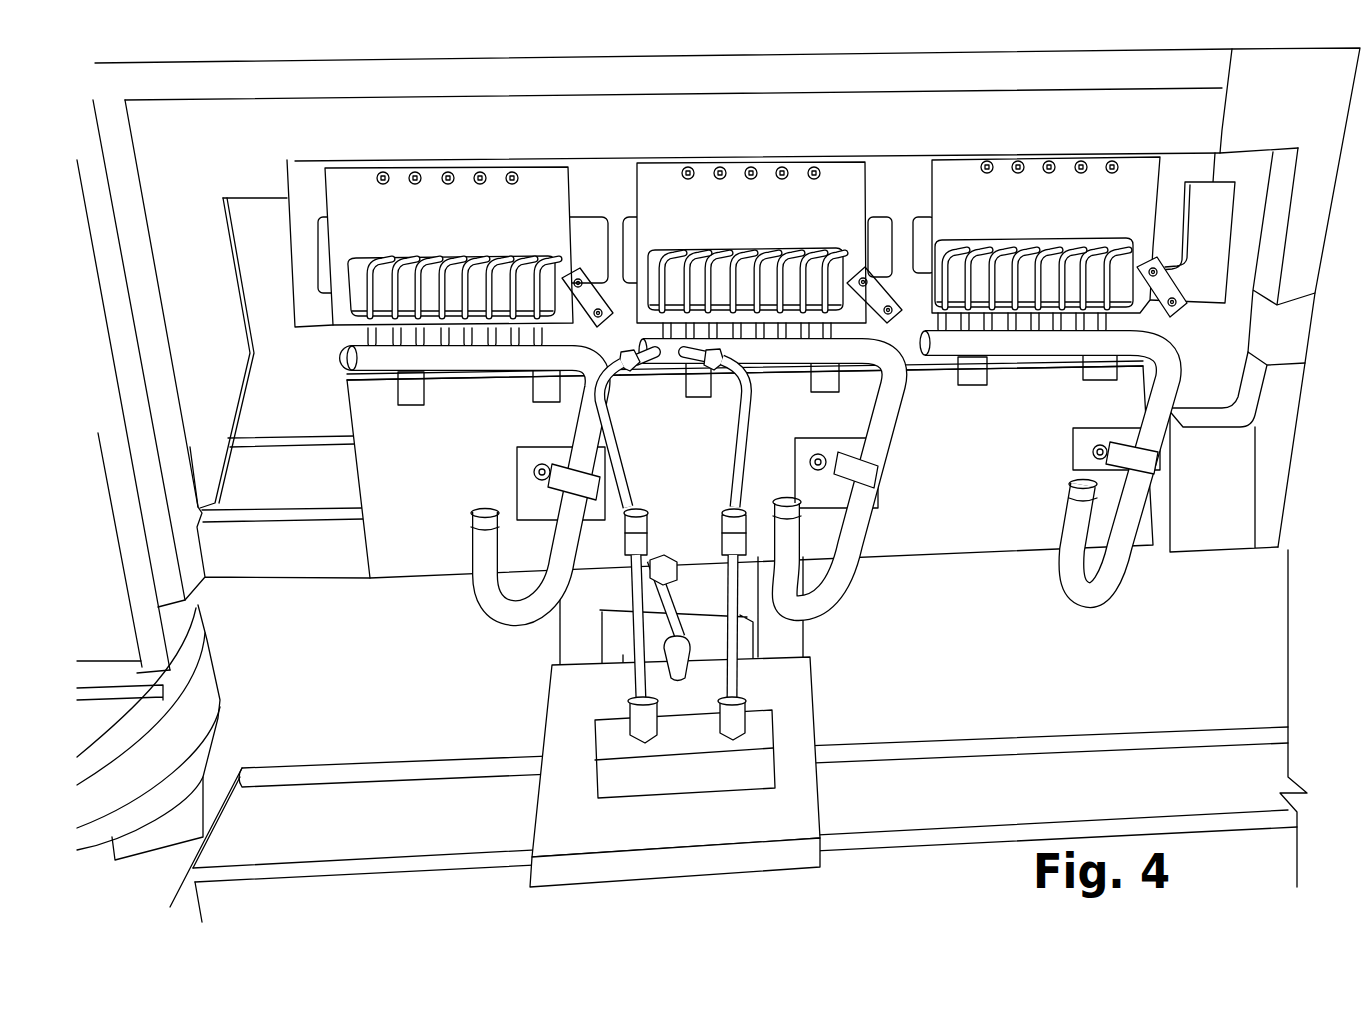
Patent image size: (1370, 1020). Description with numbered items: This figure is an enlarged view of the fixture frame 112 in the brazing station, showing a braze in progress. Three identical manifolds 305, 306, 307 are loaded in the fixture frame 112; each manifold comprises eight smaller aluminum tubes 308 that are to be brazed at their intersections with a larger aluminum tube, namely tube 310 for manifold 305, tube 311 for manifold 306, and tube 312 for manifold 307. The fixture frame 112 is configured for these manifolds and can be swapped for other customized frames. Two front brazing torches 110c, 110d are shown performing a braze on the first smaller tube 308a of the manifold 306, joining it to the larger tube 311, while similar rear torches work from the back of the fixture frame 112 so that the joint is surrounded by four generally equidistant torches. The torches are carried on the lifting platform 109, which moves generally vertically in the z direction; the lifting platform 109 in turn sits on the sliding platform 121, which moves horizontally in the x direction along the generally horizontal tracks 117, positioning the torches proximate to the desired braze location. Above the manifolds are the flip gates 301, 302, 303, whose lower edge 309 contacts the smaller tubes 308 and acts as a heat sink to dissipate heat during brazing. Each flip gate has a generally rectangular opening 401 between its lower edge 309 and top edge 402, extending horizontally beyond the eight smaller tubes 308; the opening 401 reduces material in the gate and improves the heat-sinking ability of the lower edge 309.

The fixture frame 112 is at (742, 78).
The top edge 402 is at (343, 166).
The opening 401 is at (357, 268).
The smaller aluminum tubes 308 is at (395, 273).
The first smaller tube 308a is at (665, 272).
The flip gate 301 is at (550, 216).
The flip gate 302 is at (842, 216).
The flip gate 303 is at (1067, 216).
The lower edge 309 is at (343, 341).
The larger aluminum tube 310 is at (488, 363).
The larger aluminum tube 311 is at (800, 353).
The larger aluminum tube 312 is at (1057, 357).
The brazing torch 110d is at (645, 362).
The brazing torch 110c is at (727, 383).
The manifold 305 is at (432, 510).
The manifold 306 is at (807, 600).
The manifold 307 is at (1077, 587).
The tracks 117 is at (283, 777).
The lifting platform 109 is at (705, 786).
The sliding platform 121 is at (697, 838).